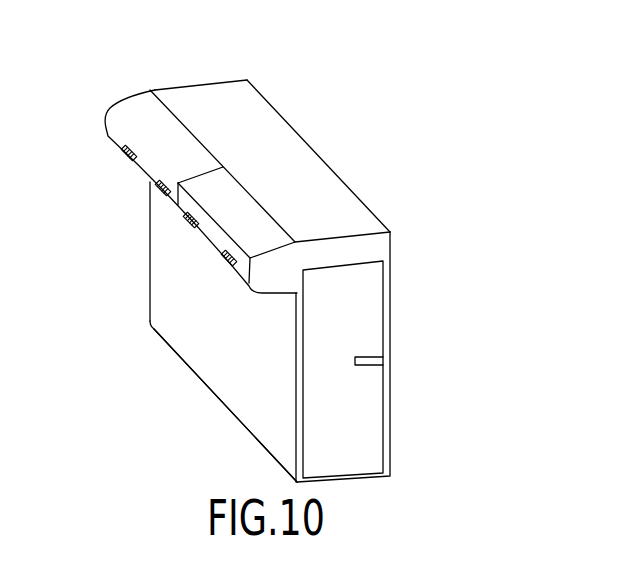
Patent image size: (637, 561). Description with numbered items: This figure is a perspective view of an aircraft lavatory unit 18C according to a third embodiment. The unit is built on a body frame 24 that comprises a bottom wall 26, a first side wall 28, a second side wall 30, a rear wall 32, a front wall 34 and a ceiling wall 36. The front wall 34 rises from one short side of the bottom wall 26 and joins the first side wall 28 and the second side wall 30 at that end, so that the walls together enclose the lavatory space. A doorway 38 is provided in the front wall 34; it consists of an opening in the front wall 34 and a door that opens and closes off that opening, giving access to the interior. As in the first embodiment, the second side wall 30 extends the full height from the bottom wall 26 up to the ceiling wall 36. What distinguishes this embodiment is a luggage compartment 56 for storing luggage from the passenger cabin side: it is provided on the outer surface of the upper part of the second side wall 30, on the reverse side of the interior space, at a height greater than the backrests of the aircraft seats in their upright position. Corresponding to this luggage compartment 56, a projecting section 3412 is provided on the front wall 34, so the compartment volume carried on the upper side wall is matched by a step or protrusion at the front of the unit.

The aircraft lavatory unit 18C is at (309, 76).
The body frame 24 is at (196, 58).
The ceiling wall 36 is at (272, 128).
The first side wall 28 is at (320, 155).
The luggage compartment 56 is at (128, 167).
The rear wall 32 is at (148, 242).
The second side wall 30 is at (196, 300).
The bottom wall 26 is at (225, 406).
The front wall 34 is at (362, 248).
The doorway 38 is at (370, 306).
The projecting section 3412 is at (273, 278).